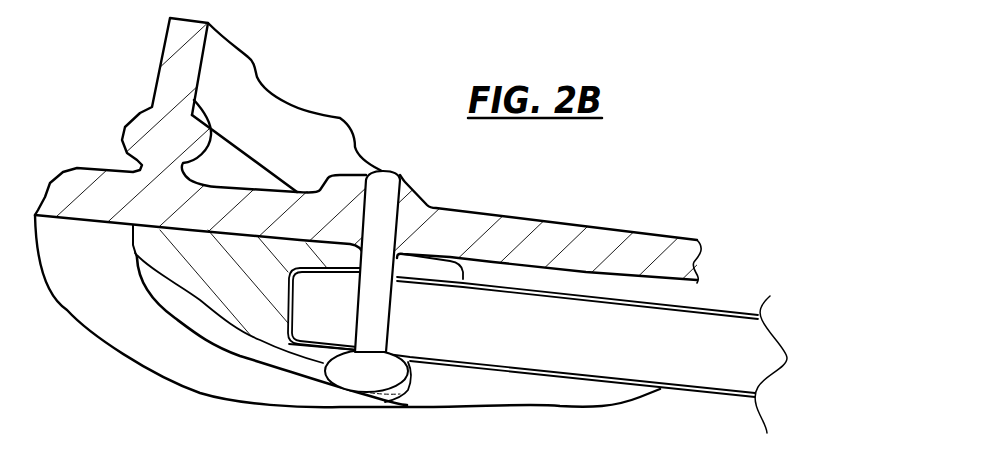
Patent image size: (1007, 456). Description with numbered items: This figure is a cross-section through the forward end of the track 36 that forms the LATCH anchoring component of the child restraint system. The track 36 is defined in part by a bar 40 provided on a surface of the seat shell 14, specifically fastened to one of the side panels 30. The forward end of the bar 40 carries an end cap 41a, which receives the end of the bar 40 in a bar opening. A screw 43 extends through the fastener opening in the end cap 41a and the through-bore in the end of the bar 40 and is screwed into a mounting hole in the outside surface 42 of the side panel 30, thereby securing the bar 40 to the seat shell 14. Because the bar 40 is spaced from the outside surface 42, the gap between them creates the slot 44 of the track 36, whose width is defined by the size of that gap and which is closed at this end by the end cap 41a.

The seat shell 14 is at (353, 108).
The side panel 30 is at (502, 237).
The screw 43 is at (373, 308).
The slot 44 is at (557, 285).
The track 36 is at (715, 287).
The outside surface 42 is at (618, 278).
The bar 40 is at (680, 358).
The end cap 41a is at (185, 281).